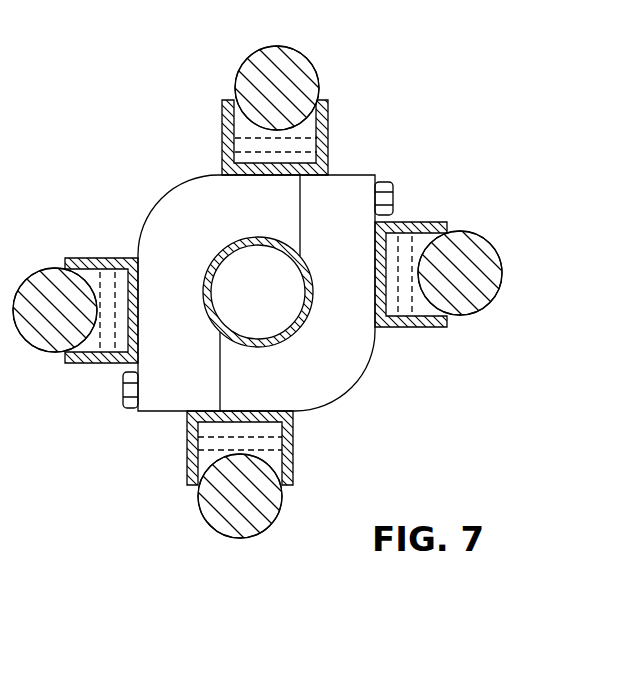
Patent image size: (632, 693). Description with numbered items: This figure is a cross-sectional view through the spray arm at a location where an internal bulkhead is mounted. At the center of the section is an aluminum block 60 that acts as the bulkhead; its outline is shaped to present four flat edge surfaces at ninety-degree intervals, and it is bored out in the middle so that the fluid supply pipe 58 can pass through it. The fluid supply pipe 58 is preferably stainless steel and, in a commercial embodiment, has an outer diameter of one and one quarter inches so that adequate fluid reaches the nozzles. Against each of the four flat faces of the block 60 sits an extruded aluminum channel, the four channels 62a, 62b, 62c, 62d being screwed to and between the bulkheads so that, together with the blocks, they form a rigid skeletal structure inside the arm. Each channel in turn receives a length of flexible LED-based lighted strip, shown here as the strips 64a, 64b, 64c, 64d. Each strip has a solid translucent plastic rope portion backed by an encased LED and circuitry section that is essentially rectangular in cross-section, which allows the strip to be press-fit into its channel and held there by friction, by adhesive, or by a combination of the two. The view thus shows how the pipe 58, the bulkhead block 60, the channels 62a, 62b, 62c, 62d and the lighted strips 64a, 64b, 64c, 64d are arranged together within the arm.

The fluid supply pipe 58 is at (222, 248).
The aluminum block 60 is at (357, 175).
The extruded aluminum channel 62a is at (403, 327).
The extruded aluminum channel 62b is at (293, 445).
The extruded aluminum channel 62c is at (80, 364).
The extruded aluminum channel 62d is at (222, 148).
The LED-based lighted strip 64a is at (463, 242).
The LED-based lighted strip 64b is at (240, 538).
The LED-based lighted strip 64c is at (43, 282).
The LED-based lighted strip 64d is at (287, 55).